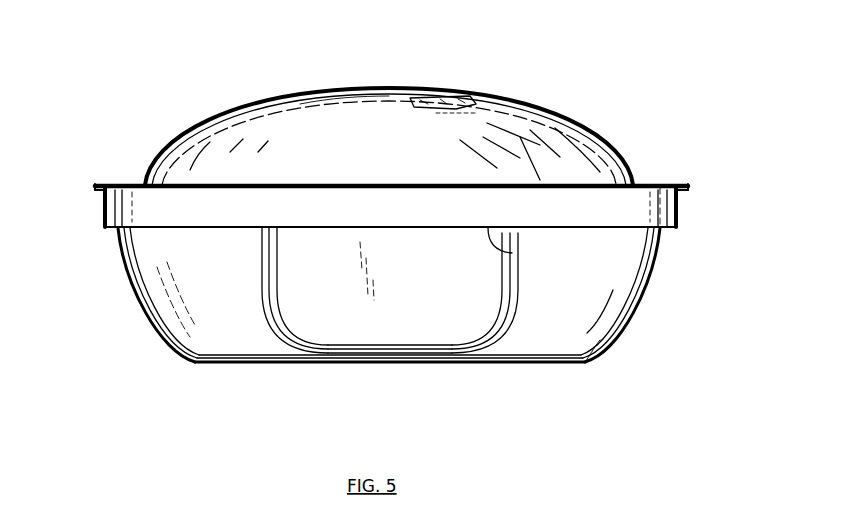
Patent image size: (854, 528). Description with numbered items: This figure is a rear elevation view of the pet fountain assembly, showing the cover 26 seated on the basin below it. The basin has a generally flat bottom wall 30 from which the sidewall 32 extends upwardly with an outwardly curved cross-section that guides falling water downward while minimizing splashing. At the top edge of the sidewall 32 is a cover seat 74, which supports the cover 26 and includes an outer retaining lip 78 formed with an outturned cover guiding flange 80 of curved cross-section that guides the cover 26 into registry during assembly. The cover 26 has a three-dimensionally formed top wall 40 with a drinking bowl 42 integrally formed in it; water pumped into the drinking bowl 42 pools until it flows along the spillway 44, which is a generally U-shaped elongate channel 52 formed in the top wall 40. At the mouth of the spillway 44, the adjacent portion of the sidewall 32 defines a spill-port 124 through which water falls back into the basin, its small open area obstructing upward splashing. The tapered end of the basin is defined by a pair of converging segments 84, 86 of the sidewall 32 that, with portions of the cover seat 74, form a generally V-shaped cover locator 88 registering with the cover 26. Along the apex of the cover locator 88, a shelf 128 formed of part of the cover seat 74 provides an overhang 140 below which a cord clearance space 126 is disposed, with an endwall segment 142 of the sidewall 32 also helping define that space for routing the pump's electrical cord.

The cover 26 is at (180, 120).
The bottom wall 30 is at (532, 363).
The sidewall 32 is at (590, 336).
The top wall 40 is at (242, 138).
The drinking bowl 42 is at (348, 89).
The spillway 44 is at (592, 130).
The elongate channel 52 is at (543, 120).
The cover seat 74 is at (118, 184).
The outer retaining lip 78 is at (103, 208).
The cover guiding flange 80 is at (99, 185).
The converging segment 84 is at (599, 204).
The converging segment 86 is at (247, 203).
The cover locator 88 is at (327, 234).
The spill-port 124 is at (665, 184).
The cord clearance space 126 is at (337, 314).
The shelf 128 is at (518, 260).
The overhang 140 is at (423, 232).
The endwall segment 142 is at (387, 282).